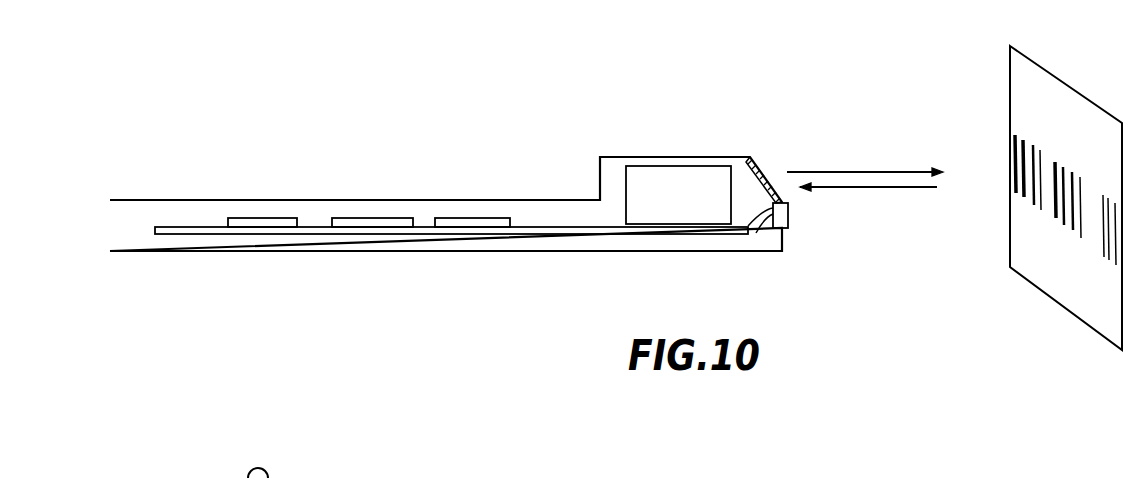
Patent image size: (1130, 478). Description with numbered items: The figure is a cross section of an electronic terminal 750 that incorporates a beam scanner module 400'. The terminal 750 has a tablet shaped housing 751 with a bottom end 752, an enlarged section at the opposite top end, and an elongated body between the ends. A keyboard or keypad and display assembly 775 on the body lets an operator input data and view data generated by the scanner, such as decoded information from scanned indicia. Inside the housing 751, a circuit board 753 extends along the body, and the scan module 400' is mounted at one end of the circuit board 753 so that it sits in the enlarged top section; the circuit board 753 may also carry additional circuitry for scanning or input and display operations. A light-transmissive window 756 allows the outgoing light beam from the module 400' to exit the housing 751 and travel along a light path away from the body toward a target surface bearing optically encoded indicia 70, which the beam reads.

The optically encoded indicia 70 is at (1062, 120).
The scan module 400' is at (634, 180).
The terminal 750 is at (401, 201).
The housing 751 is at (420, 253).
The bottom end 752 is at (110, 227).
The circuit board 753 is at (619, 234).
The light-transmissive window 756 is at (763, 166).
The keyboard or keypad and display assembly 775 is at (387, 200).